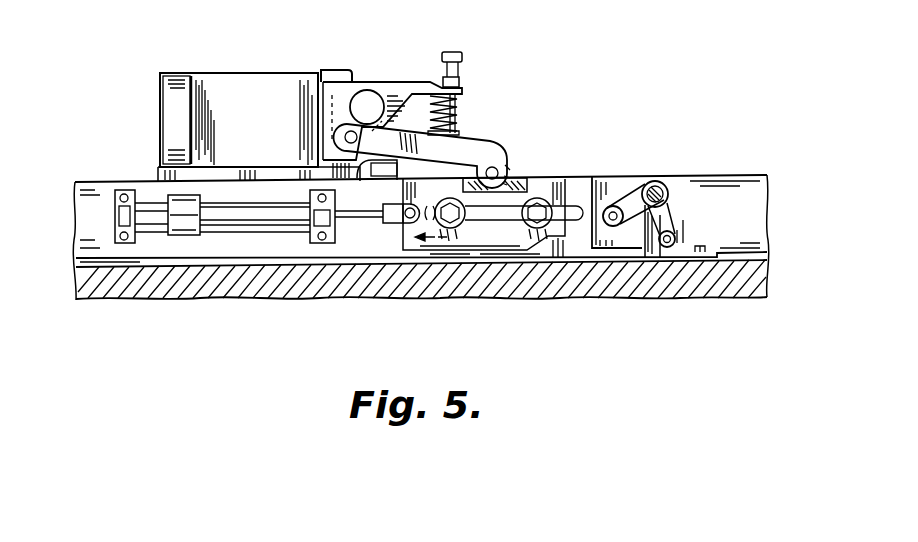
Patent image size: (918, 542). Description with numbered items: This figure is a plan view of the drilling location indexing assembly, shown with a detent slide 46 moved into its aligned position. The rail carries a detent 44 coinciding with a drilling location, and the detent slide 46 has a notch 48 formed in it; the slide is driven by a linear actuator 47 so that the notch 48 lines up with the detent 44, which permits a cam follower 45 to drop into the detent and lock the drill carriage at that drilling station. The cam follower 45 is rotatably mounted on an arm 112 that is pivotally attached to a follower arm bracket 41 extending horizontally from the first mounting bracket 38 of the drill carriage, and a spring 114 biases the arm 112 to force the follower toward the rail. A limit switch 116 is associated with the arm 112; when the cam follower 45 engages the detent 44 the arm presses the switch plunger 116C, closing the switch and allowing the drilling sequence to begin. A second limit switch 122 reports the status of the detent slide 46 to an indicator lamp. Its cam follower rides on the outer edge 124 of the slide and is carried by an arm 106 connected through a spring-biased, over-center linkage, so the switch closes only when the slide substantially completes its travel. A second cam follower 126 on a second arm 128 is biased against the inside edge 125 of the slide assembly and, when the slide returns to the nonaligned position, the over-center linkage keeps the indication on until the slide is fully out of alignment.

The first mounting bracket 38 is at (329, 68).
The follower arm bracket 41 is at (393, 82).
The spring 114 is at (458, 118).
The arm 112 is at (475, 150).
The cam follower 45 is at (515, 178).
The detent 44 is at (530, 188).
The notch 48 is at (592, 186).
The detent slide 46 is at (618, 198).
The second cam follower 126 is at (620, 205).
The second arm 128 is at (642, 180).
The limit switch 122 is at (676, 179).
The arm 106 is at (673, 222).
The linear actuator 47 is at (240, 222).
The rod end 116C is at (357, 182).
The limit switch 116 is at (392, 168).
The inside edge 125 is at (648, 236).
The outer edge 124 is at (675, 247).